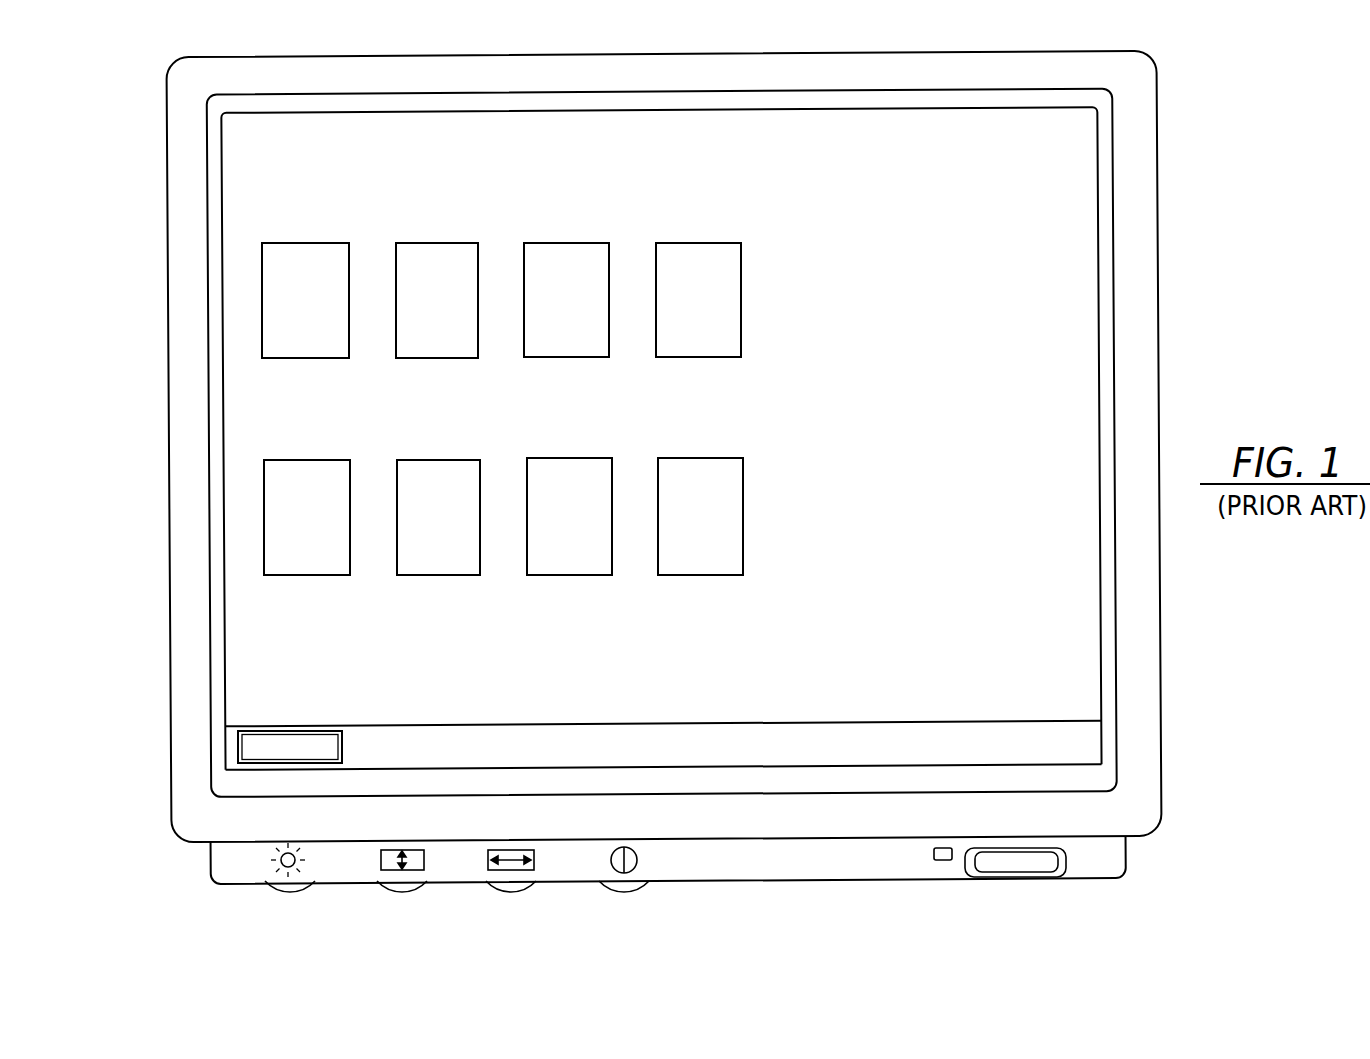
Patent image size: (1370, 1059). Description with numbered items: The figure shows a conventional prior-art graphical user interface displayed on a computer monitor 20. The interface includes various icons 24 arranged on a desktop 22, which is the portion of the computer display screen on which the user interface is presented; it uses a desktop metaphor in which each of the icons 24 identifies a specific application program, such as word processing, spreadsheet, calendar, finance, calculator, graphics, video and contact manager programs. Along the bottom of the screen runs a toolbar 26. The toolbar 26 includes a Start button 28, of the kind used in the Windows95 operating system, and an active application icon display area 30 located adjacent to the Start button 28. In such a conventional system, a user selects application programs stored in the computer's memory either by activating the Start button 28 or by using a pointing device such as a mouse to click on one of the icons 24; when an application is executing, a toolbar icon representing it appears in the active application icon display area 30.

The computer monitor 20 is at (1147, 709).
The desktop 22 is at (1099, 379).
The icons 24 is at (330, 243).
The toolbar 26 is at (1092, 745).
The Start button 28 is at (240, 741).
The active application icon display area 30 is at (773, 753).